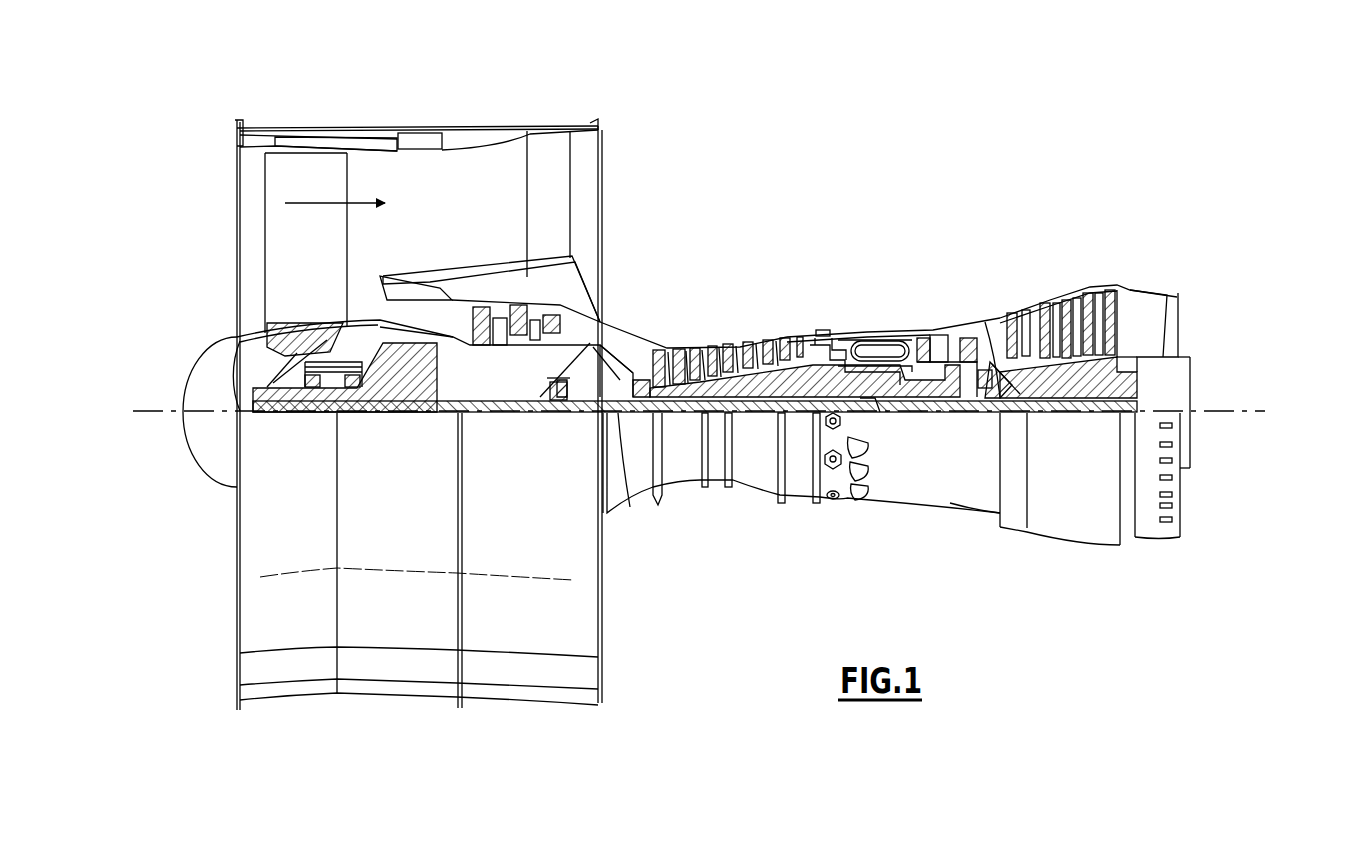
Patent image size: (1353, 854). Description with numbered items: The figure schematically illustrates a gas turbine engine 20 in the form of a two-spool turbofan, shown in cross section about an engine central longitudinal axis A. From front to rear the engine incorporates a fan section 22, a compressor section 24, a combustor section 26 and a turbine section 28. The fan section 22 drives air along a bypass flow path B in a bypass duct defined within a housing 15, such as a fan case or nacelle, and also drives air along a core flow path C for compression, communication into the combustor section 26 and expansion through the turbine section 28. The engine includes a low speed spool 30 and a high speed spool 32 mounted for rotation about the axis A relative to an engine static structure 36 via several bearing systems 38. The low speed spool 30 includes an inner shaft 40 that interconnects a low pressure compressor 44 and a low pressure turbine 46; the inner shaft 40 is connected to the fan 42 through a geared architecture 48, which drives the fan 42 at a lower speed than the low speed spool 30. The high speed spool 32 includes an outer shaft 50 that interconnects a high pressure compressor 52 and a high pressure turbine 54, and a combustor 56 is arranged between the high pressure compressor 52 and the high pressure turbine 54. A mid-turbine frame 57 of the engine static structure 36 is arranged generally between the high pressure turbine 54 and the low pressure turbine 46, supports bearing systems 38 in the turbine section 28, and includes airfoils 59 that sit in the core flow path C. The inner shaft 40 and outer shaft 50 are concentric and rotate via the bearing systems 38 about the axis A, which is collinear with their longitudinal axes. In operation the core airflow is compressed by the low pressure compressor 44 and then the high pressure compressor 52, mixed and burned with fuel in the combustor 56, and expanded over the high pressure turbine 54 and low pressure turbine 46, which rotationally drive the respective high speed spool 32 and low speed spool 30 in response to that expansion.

The gas turbine engine 20 is at (878, 180).
The fan section 22 is at (350, 122).
The housing 15 is at (420, 133).
The fan 42 is at (326, 258).
The bypass flow path B is at (316, 203).
The core flow path C is at (425, 312).
The compressor section 24 is at (648, 318).
The combustor section 26 is at (872, 310).
The turbine section 28 is at (1020, 272).
The low speed spool 30 is at (757, 415).
The high speed spool 32 is at (800, 360).
The engine static structure 36 is at (798, 505).
The bearing systems 38 is at (550, 400).
The inner shaft 40 is at (620, 420).
The low pressure compressor 44 is at (560, 330).
The low pressure turbine 46 is at (1065, 290).
The geared architecture 48 is at (425, 400).
The outer shaft 50 is at (880, 412).
The high pressure compressor 52 is at (735, 345).
The high pressure turbine 54 is at (942, 335).
The combustor 56 is at (872, 350).
The mid-turbine frame 57 is at (985, 322).
The airfoils 59 is at (1010, 370).
The engine central longitudinal axis A is at (1262, 411).